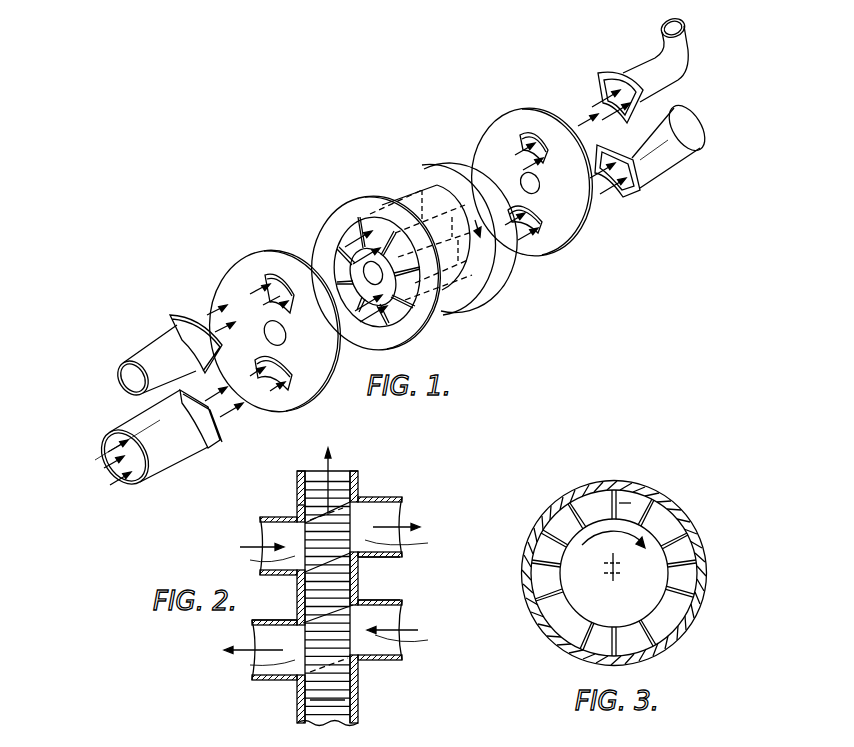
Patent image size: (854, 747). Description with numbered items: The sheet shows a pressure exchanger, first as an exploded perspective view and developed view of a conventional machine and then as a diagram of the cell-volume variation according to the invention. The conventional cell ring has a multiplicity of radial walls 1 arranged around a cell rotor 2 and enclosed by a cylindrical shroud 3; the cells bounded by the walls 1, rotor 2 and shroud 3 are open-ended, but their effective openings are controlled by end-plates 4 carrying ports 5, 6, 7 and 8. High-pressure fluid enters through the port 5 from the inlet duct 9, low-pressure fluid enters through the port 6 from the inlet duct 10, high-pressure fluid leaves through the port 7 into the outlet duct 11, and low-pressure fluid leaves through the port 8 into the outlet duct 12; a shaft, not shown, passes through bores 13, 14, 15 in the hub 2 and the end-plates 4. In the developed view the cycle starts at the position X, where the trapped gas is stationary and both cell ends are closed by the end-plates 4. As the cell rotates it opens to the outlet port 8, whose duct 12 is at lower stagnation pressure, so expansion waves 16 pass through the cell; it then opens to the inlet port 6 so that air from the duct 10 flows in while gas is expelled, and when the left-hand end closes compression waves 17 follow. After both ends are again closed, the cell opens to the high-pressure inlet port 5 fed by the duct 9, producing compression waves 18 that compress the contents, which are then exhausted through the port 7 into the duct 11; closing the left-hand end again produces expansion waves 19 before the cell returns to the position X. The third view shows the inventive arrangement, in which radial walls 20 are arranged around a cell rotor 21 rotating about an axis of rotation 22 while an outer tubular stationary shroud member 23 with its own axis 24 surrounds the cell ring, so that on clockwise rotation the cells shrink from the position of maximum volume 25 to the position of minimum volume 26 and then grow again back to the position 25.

In FIG. 1, the radial walls 1 is at (345, 227).
In FIG. 2, the radial walls 1 is at (333, 481).
In FIG. 1, the cell rotor 2 is at (350, 267).
In FIG. 1, the cylindrical shroud 3 is at (478, 278).
In FIG. 1, the end-plates 4 is at (316, 392).
In FIG. 2, the end-plates 4 is at (297, 712).
In FIG. 1, the high-pressure scavenging stage inlet port 5 is at (276, 282).
In FIG. 2, the high-pressure scavenging stage inlet port 5 is at (300, 520).
In FIG. 1, the low-pressure scavenging stage inlet port 6 is at (282, 388).
In FIG. 2, the low-pressure scavenging stage inlet port 6 is at (377, 633).
In FIG. 1, the high-pressure scavenging stage outlet port 7 is at (527, 150).
In FIG. 2, the high-pressure scavenging stage outlet port 7 is at (398, 541).
In FIG. 1, the low-pressure scavenging stage outlet port 8 is at (540, 228).
In FIG. 2, the low-pressure scavenging stage outlet port 8 is at (295, 660).
In FIG. 1, the inlet duct 9 is at (160, 350).
In FIG. 2, the inlet duct 9 is at (268, 520).
In FIG. 1, the inlet duct 10 is at (155, 468).
In FIG. 2, the inlet duct 10 is at (397, 602).
In FIG. 1, the outlet duct 11 is at (648, 92).
In FIG. 2, the outlet duct 11 is at (397, 560).
In FIG. 1, the outlet duct 12 is at (648, 172).
In FIG. 2, the outlet duct 12 is at (278, 622).
In FIG. 1, the bore 13 is at (420, 318).
In FIG. 1, the bore 14 is at (283, 338).
In FIG. 1, the bore 15 is at (540, 186).
In FIG. 2, the expansion waves 16 is at (348, 660).
In FIG. 2, the compression waves 17 is at (360, 615).
In FIG. 2, the compression waves 18 is at (305, 570).
In FIG. 2, the expansion waves 19 is at (355, 505).
In FIG. 3, the radial walls 20 is at (698, 545).
In FIG. 3, the cell rotor 21 is at (651, 579).
In FIG. 3, the axis of rotation 22 is at (610, 565).
In FIG. 3, the outer tubular stationary shroud member 23 is at (673, 638).
In FIG. 3, the axis 24 is at (610, 574).
In FIG. 3, the position of maximum volume 25 is at (632, 653).
In FIG. 3, the position of minimum volume 26 is at (624, 503).
In FIG. 2, the position X is at (340, 700).